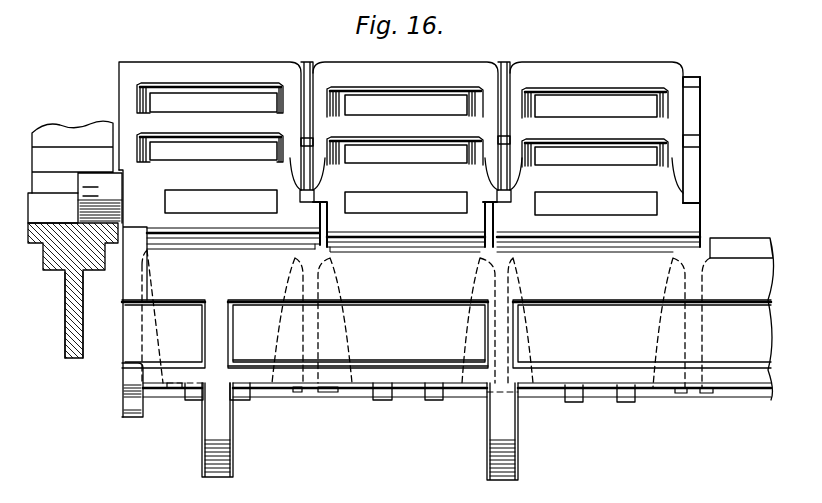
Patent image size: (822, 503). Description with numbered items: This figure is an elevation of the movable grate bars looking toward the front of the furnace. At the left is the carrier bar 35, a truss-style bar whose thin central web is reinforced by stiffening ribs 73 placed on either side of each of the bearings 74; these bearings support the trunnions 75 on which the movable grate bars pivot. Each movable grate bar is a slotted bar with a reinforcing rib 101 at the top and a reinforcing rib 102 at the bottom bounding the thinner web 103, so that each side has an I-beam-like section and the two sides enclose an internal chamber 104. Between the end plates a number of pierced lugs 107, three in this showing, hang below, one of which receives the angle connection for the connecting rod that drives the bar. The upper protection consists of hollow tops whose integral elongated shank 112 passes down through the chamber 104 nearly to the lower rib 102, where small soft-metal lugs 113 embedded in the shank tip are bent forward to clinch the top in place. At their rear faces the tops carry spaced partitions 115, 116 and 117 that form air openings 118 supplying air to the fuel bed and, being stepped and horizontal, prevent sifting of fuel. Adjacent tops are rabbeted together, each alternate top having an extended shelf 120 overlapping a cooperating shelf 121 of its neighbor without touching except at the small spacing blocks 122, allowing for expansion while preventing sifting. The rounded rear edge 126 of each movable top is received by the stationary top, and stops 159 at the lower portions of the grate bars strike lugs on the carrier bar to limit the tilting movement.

The carrier bar 35 is at (57, 272).
The stiffening ribs 73 is at (67, 337).
The bearings 74 is at (45, 223).
The trunnions 75 is at (85, 182).
The reinforcing rib 101 is at (412, 293).
The reinforcing rib 102 is at (418, 367).
The web 103 is at (642, 334).
The internal chamber 104 is at (295, 392).
The lugs 107 is at (233, 450).
The shank 112 is at (283, 350).
The lugs 113 is at (240, 398).
The partition 115 is at (402, 93).
The partition 116 is at (402, 141).
The partition 117 is at (411, 193).
The air openings 118 is at (403, 152).
The extended shelf 120 is at (308, 110).
The shelf 121 is at (697, 163).
The spacing blocks 122 is at (302, 143).
The rounded rear edge 126 is at (423, 236).
The stops 159 is at (138, 418).